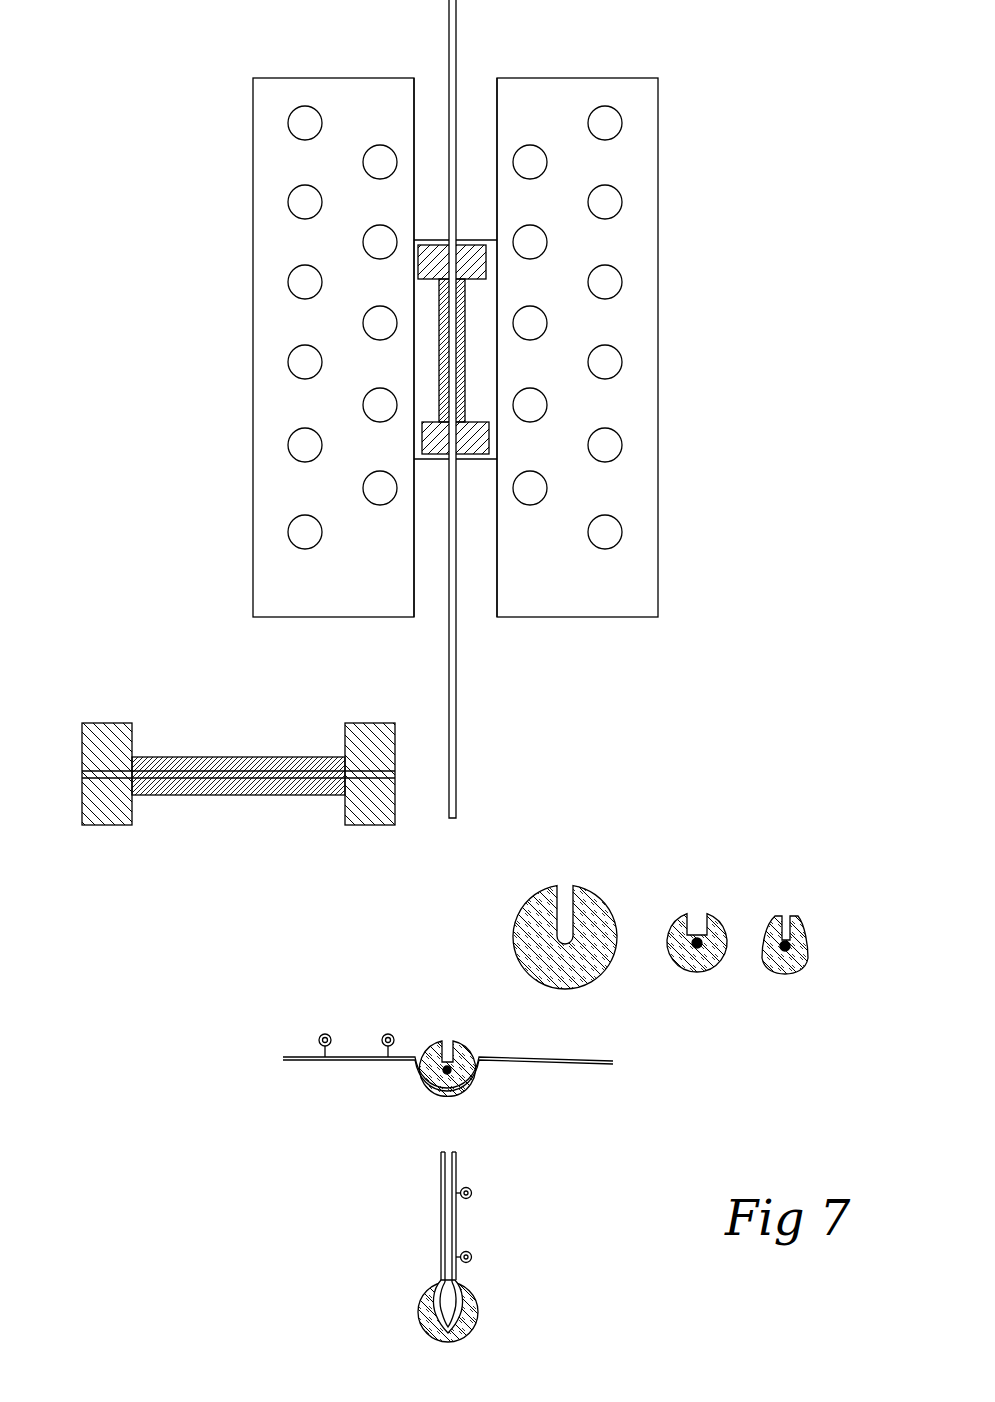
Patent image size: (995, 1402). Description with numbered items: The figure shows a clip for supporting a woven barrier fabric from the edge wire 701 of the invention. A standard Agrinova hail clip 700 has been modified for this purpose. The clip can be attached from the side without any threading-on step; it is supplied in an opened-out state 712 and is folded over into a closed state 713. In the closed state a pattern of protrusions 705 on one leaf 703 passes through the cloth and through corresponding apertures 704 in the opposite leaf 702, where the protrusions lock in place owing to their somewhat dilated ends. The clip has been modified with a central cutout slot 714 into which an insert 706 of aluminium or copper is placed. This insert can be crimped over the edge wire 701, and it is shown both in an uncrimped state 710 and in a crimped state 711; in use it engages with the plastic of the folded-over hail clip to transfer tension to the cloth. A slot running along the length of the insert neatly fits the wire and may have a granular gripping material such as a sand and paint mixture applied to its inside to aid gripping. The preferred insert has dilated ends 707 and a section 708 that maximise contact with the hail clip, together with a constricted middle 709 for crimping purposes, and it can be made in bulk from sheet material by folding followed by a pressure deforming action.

The hail clip 700 is at (456, 409).
The edge wire 701 is at (543, 60).
The opposite leaf 702 is at (752, 378).
The leaf 703 is at (253, 436).
The aperture 704 is at (622, 288).
The protrusion 705 is at (292, 547).
The insert 706 is at (220, 794).
The dilated end 707 is at (108, 832).
The section 708 is at (596, 885).
The constricted middle 709 is at (268, 800).
The uncrimped state 710 is at (710, 912).
The crimped state 711 is at (800, 917).
The opened-out state 712 is at (357, 1058).
The closed state 713 is at (440, 1228).
The central cutout slot 714 is at (485, 605).